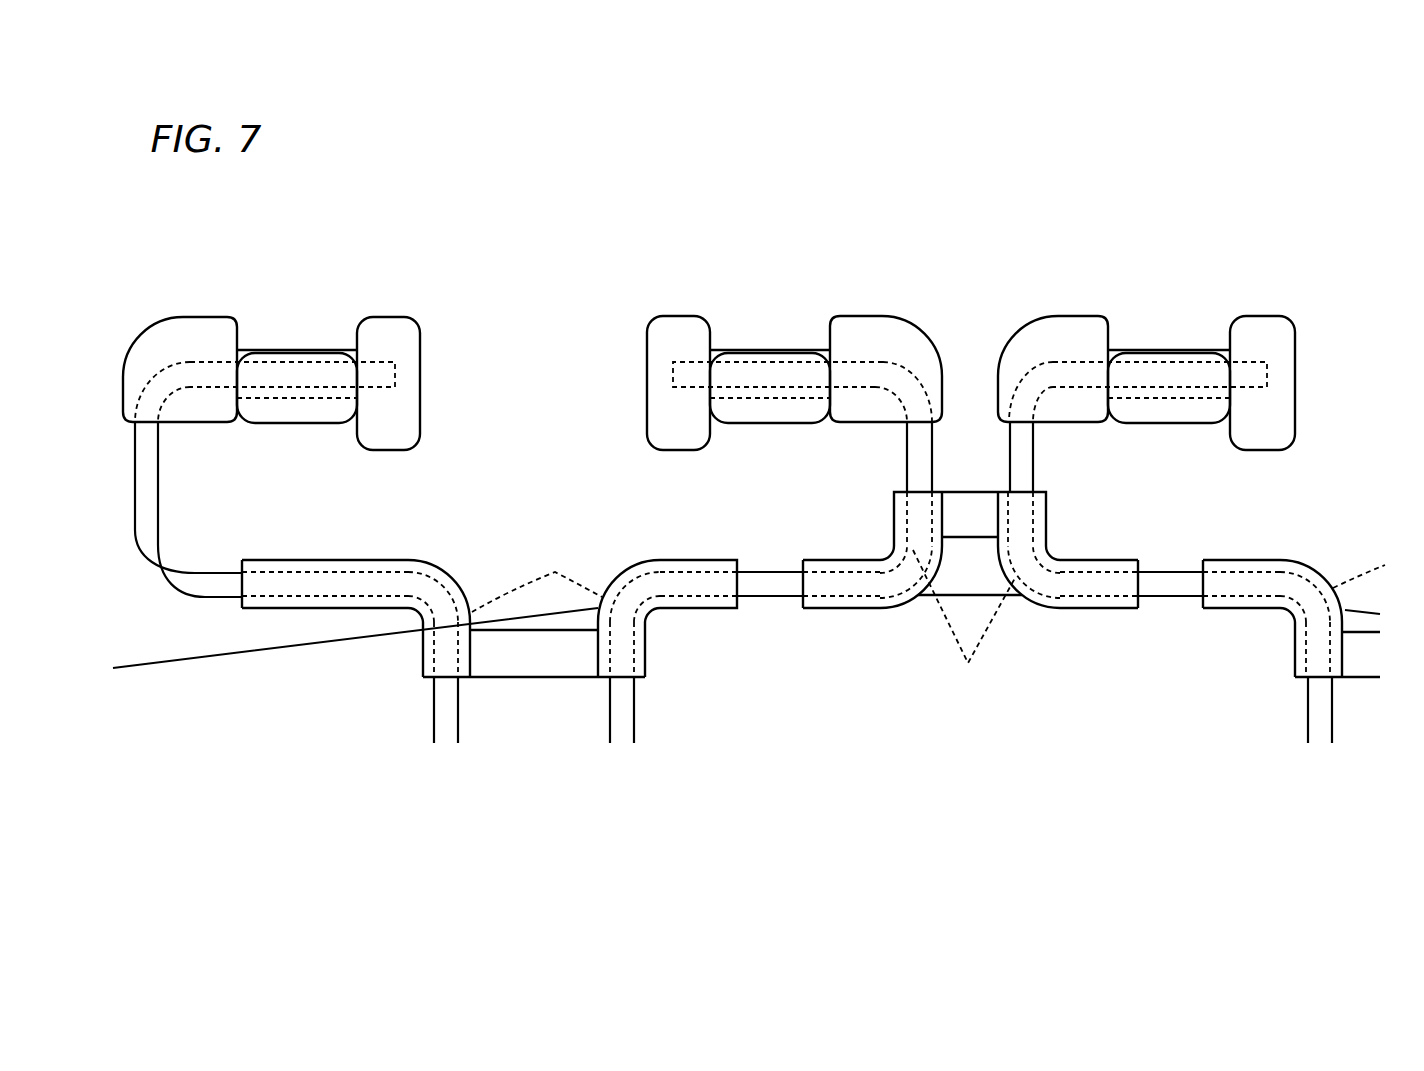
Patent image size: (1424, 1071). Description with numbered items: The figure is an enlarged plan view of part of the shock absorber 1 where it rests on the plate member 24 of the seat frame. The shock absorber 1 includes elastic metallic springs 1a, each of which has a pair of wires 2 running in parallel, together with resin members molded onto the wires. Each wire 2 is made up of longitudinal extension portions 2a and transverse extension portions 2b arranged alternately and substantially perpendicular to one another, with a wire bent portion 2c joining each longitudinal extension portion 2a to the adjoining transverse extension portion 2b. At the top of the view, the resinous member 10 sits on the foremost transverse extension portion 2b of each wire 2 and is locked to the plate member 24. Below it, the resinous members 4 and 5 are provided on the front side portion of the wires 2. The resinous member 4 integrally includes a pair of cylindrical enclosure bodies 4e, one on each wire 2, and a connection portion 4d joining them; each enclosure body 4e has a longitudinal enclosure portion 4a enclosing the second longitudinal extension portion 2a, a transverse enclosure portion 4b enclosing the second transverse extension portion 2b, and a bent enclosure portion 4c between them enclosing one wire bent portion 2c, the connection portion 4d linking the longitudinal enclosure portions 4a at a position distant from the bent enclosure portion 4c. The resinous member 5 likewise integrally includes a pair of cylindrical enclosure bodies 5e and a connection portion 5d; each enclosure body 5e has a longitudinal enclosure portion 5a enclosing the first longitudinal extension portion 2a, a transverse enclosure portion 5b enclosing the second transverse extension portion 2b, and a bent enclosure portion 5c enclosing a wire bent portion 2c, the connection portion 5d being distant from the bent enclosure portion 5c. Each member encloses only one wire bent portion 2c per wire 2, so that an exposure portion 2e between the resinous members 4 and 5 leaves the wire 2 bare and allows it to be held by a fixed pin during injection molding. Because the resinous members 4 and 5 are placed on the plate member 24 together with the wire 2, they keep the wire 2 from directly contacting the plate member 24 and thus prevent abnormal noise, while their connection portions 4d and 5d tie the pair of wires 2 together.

The shock absorber 1 is at (355, 268).
The spring 1a is at (427, 755).
The wire 2 is at (749, 551).
The longitudinal extension portion 2a is at (917, 462).
The transverse extension portion 2b is at (217, 585).
The wire bent portion 2c is at (163, 577).
The exposure portion 2e is at (190, 553).
The resinous member 4 is at (812, 606).
The longitudinal enclosure portion 4a is at (430, 643).
The transverse enclosure portion 4b is at (325, 588).
The bent enclosure portion 4c is at (453, 587).
The connection portion 4d is at (535, 665).
The enclosure body 4e is at (348, 562).
The resinous member 5 is at (982, 565).
The longitudinal enclosure portion 5a is at (902, 522).
The transverse enclosure portion 5b is at (853, 603).
The bent enclosure portion 5c is at (892, 585).
The connection portion 5d is at (963, 505).
The enclosure body 5e is at (825, 555).
The resinous member 10 is at (630, 347).
The plate member 24 is at (177, 677).